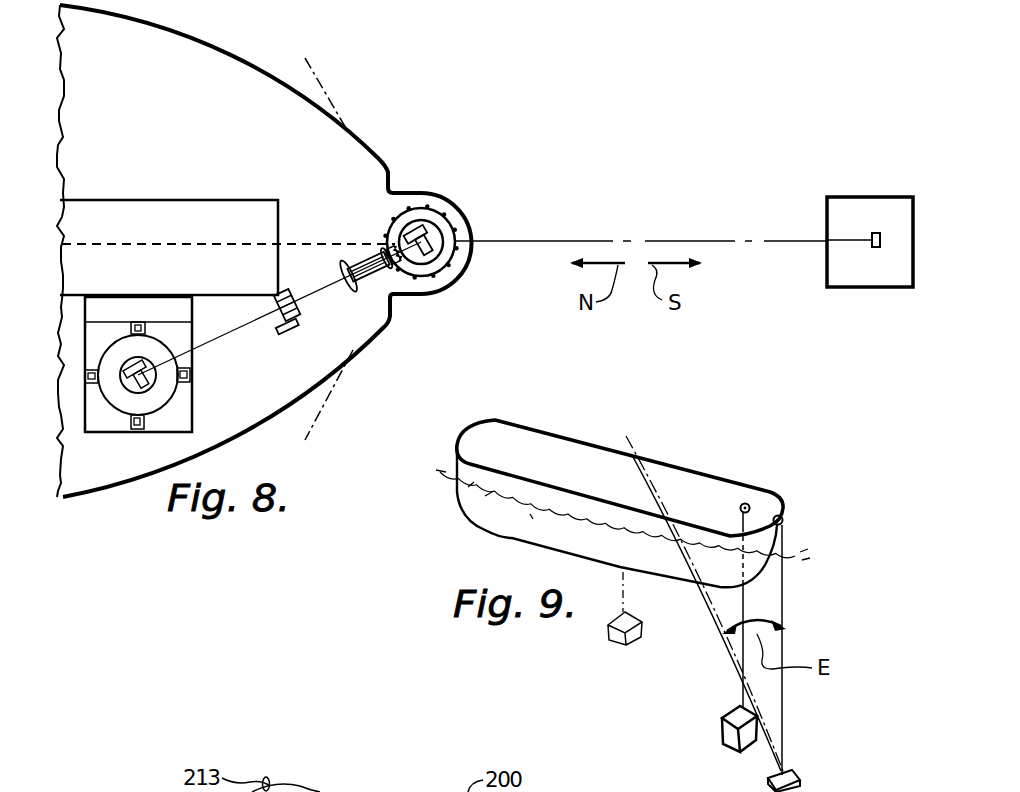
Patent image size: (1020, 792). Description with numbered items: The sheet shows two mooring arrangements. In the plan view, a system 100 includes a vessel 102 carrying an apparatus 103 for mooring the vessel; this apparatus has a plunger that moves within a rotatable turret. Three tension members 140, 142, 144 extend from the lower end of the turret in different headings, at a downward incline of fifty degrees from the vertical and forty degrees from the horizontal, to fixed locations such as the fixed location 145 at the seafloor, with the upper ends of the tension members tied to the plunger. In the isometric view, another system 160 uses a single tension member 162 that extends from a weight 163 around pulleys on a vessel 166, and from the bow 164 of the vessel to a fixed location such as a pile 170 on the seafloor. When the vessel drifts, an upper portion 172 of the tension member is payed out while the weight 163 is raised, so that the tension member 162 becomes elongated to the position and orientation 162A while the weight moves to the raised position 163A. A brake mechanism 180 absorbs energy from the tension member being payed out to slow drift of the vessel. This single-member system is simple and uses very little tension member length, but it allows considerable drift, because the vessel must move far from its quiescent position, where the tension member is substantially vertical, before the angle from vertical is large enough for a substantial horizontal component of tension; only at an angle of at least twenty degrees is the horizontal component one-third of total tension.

In FIG. 8, the system 100 is at (442, 327).
In FIG. 8, the vessel 102 is at (190, 38).
In FIG. 8, the apparatus for mooring the vessel 103 is at (452, 184).
In FIG. 8, the tension member 140 is at (505, 241).
In FIG. 8, the tension member 142 is at (330, 398).
In FIG. 8, the tension member 144 is at (333, 105).
In FIG. 8, the fixed location 145 is at (860, 197).
In FIG. 9, the system 160 is at (780, 462).
In FIG. 9, the tension member 162 is at (783, 600).
In FIG. 9, the position and orientation of tension member 162A is at (727, 657).
In FIG. 9, the weight 163 is at (722, 732).
In FIG. 9, the raised position of weight 163A is at (640, 640).
In FIG. 9, the bow 164 is at (785, 520).
In FIG. 9, the vessel 166 is at (668, 468).
In FIG. 9, the pile 170 is at (790, 776).
In FIG. 9, the upper portion of the tension member 172 is at (756, 505).
In FIG. 9, the brake mechanism 180 is at (740, 503).